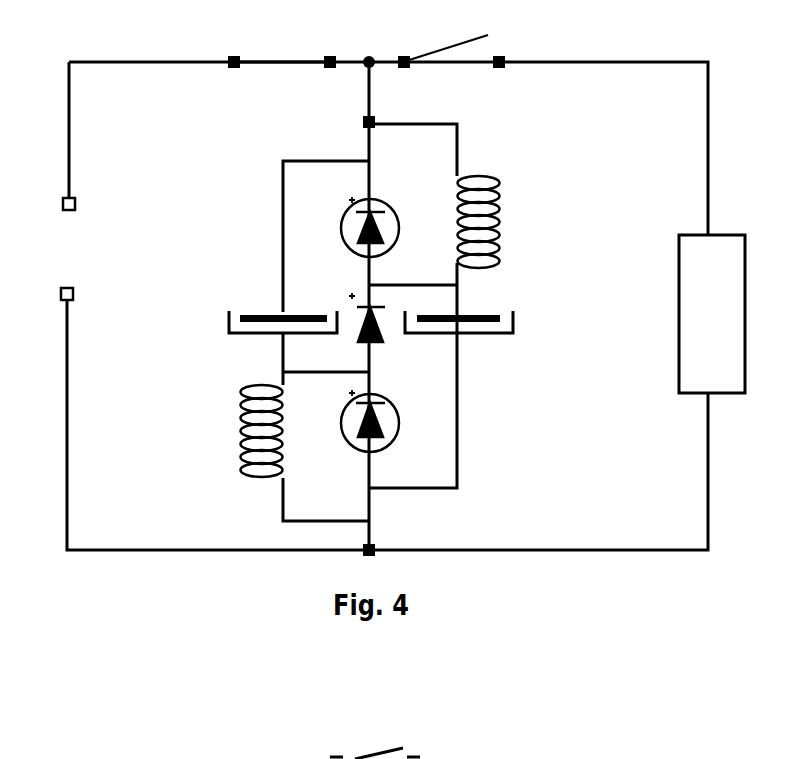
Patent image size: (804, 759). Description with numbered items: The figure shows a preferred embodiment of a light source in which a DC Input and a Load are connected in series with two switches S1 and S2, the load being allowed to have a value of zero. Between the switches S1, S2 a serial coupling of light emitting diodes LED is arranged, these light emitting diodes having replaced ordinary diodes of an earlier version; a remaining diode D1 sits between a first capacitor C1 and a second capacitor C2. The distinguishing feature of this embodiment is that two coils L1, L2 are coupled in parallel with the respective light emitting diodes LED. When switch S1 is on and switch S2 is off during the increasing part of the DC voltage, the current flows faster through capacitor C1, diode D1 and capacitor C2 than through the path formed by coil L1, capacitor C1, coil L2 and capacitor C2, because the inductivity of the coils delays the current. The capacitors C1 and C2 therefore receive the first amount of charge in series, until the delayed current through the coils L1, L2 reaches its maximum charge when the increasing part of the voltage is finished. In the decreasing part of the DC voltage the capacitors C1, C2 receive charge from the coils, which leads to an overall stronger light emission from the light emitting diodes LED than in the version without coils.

The switch S1 is at (282, 85).
The switch S2 is at (447, 71).
The capacitor C1 is at (283, 306).
The capacitor C2 is at (459, 342).
The coil L1 is at (244, 431).
The coil L2 is at (496, 222).
The diode D1 is at (362, 307).
The light emitting diode LED is at (384, 330).
The load Load is at (712, 314).
The DC input DC Input is at (82, 249).